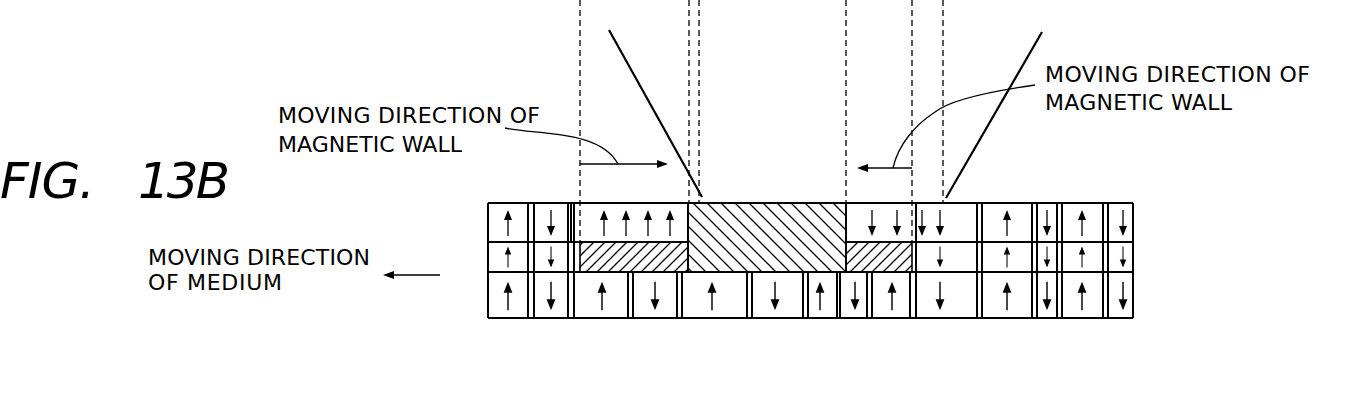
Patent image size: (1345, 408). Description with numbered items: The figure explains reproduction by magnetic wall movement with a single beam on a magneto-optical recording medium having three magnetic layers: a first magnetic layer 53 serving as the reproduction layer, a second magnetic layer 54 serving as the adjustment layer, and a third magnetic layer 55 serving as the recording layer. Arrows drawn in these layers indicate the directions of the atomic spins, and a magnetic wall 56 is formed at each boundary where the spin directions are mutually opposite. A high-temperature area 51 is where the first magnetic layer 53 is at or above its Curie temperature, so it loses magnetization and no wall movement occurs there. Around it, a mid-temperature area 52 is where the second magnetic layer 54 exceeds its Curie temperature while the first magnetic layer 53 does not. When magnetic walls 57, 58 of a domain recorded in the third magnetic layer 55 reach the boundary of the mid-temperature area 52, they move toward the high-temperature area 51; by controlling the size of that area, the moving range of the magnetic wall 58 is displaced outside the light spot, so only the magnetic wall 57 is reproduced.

The high-temperature area 51 is at (760, 203).
The mid-temperature area 52 is at (647, 272).
The first magnetic layer 53 is at (1140, 229).
The second magnetic layer 54 is at (1140, 264).
The third magnetic layer 55 is at (1140, 304).
The magnetic wall 56 is at (983, 203).
The magnetic wall 57 is at (917, 203).
The magnetic wall 58 is at (570, 203).